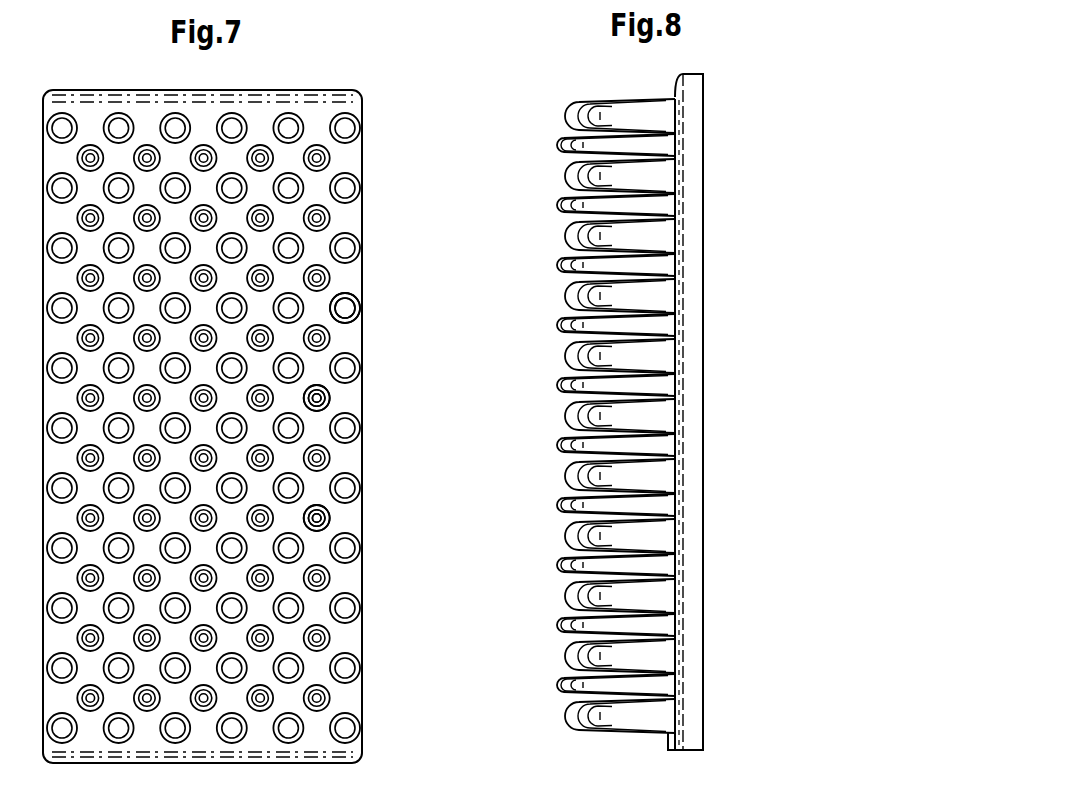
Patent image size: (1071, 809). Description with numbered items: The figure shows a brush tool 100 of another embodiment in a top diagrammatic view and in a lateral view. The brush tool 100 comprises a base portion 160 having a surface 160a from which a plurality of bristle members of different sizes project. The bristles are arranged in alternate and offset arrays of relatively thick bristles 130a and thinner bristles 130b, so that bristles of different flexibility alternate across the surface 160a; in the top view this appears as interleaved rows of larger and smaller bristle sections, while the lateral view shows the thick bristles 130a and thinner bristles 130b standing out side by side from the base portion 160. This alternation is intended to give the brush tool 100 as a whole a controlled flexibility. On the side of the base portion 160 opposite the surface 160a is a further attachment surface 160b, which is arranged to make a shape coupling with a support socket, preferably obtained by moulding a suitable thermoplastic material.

In FIG. 7, the brush tool 100 is at (261, 426).
In FIG. 8, the brush tool 100 is at (632, 441).
In FIG. 7, the thick bristles 130a is at (342, 311).
In FIG. 8, the thick bristles 130a is at (567, 647).
In FIG. 7, the thinner bristles 130b is at (340, 400).
In FIG. 8, the thinner bristles 130b is at (560, 510).
In FIG. 7, the base portion 160 is at (365, 640).
In FIG. 8, the base portion 160 is at (688, 300).
In FIG. 7, the surface 160a is at (340, 520).
In FIG. 8, the surface 160a is at (680, 570).
In FIG. 8, the attachment surface 160b is at (695, 495).